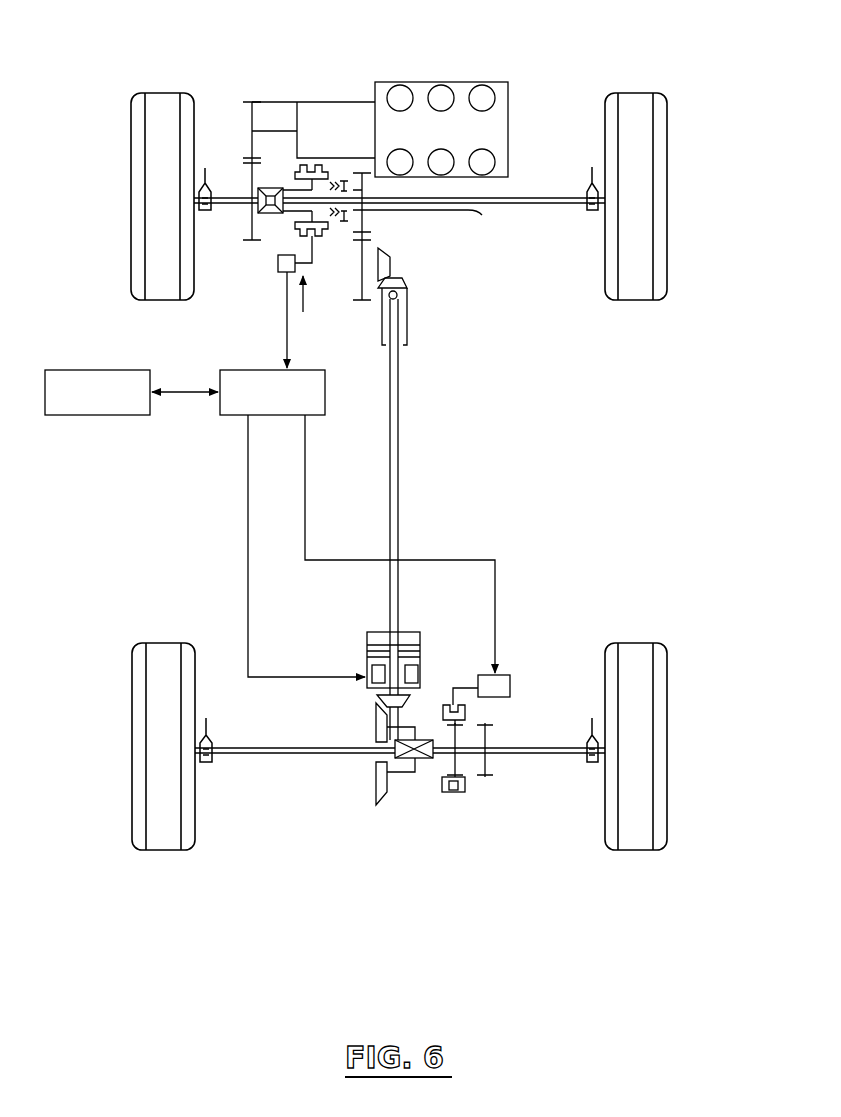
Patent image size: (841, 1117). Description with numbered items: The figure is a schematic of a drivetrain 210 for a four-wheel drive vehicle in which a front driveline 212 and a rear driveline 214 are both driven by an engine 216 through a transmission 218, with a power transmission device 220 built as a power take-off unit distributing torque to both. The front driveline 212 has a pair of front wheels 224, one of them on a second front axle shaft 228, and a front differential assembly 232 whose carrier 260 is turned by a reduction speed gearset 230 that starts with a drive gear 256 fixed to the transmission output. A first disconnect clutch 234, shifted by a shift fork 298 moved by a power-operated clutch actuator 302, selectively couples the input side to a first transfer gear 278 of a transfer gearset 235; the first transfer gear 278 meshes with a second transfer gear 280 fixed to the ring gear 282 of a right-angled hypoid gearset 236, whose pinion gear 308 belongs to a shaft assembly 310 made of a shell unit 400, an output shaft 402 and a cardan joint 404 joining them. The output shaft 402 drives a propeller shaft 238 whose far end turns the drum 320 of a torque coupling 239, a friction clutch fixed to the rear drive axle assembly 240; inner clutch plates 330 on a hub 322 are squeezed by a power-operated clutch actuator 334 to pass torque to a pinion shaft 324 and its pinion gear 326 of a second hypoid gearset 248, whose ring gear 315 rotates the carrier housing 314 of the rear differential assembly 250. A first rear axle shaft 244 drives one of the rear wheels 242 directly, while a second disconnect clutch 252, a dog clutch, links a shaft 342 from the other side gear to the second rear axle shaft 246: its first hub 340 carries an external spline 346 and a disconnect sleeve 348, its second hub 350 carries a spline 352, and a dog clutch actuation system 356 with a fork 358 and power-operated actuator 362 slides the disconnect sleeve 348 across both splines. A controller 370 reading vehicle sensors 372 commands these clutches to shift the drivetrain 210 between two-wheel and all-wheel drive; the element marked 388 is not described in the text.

The drivetrain 210 is at (598, 65).
The front driveline 212 is at (229, 249).
The rear driveline 214 is at (486, 654).
The engine 216 is at (458, 82).
The transmission 218 is at (338, 102).
The power transmission device 220 is at (229, 134).
The front wheels 224 is at (132, 192).
The second front axle shaft 228 is at (573, 204).
The reduction speed gearset 230 is at (233, 109).
The front differential assembly 232 is at (271, 216).
The first disconnect clutch 234 is at (342, 170).
The transfer gearset 235 is at (378, 225).
The right-angled hypoid gearset 236 is at (410, 282).
The propeller shaft 238 is at (400, 440).
The torque coupling 239 is at (431, 639).
The rear drive axle assembly 240 is at (236, 606).
The rear wheels 242 is at (133, 743).
The first rear axle shaft 244 is at (245, 747).
The second rear axle shaft 246 is at (567, 748).
The second hypoid gearset 248 is at (360, 726).
The rear differential assembly 250 is at (433, 739).
The second disconnect clutch 252 is at (479, 796).
The drive gear 256 is at (253, 103).
The carrier 260 is at (264, 210).
The first transfer gear 278 is at (438, 217).
The second transfer gear 280 is at (362, 278).
The ring gear 282 is at (392, 252).
The shift fork 298 is at (312, 242).
The power-operated clutch actuator 302 is at (278, 266).
The pinion gear 308 is at (410, 288).
The shaft assembly 310 is at (423, 299).
The carrier housing 314 is at (387, 802).
The ring gear 315 is at (374, 780).
The drum 320 is at (378, 633).
The hub 322 is at (394, 632).
The pinion shaft 324 is at (367, 653).
The pinion gear 326 is at (377, 695).
The inner clutch plates 330 is at (367, 660).
The power-operated clutch actuator 334 is at (420, 672).
The first hub 340 is at (444, 784).
The shaft 342 is at (405, 775).
The external spline 346 is at (455, 792).
The disconnect sleeve 348 is at (450, 792).
The second hub 350 is at (488, 764).
The spline 352 is at (489, 778).
The dog clutch actuation system 356 is at (513, 665).
The fork 358 is at (452, 702).
The power-operated actuator 362 is at (510, 688).
The controller 370 is at (325, 372).
The vehicle sensors 372 is at (65, 350).
The housing 388 is at (422, 655).
The shell unit 400 is at (408, 335).
The output shaft 402 is at (400, 372).
The cardan joint 404 is at (383, 332).